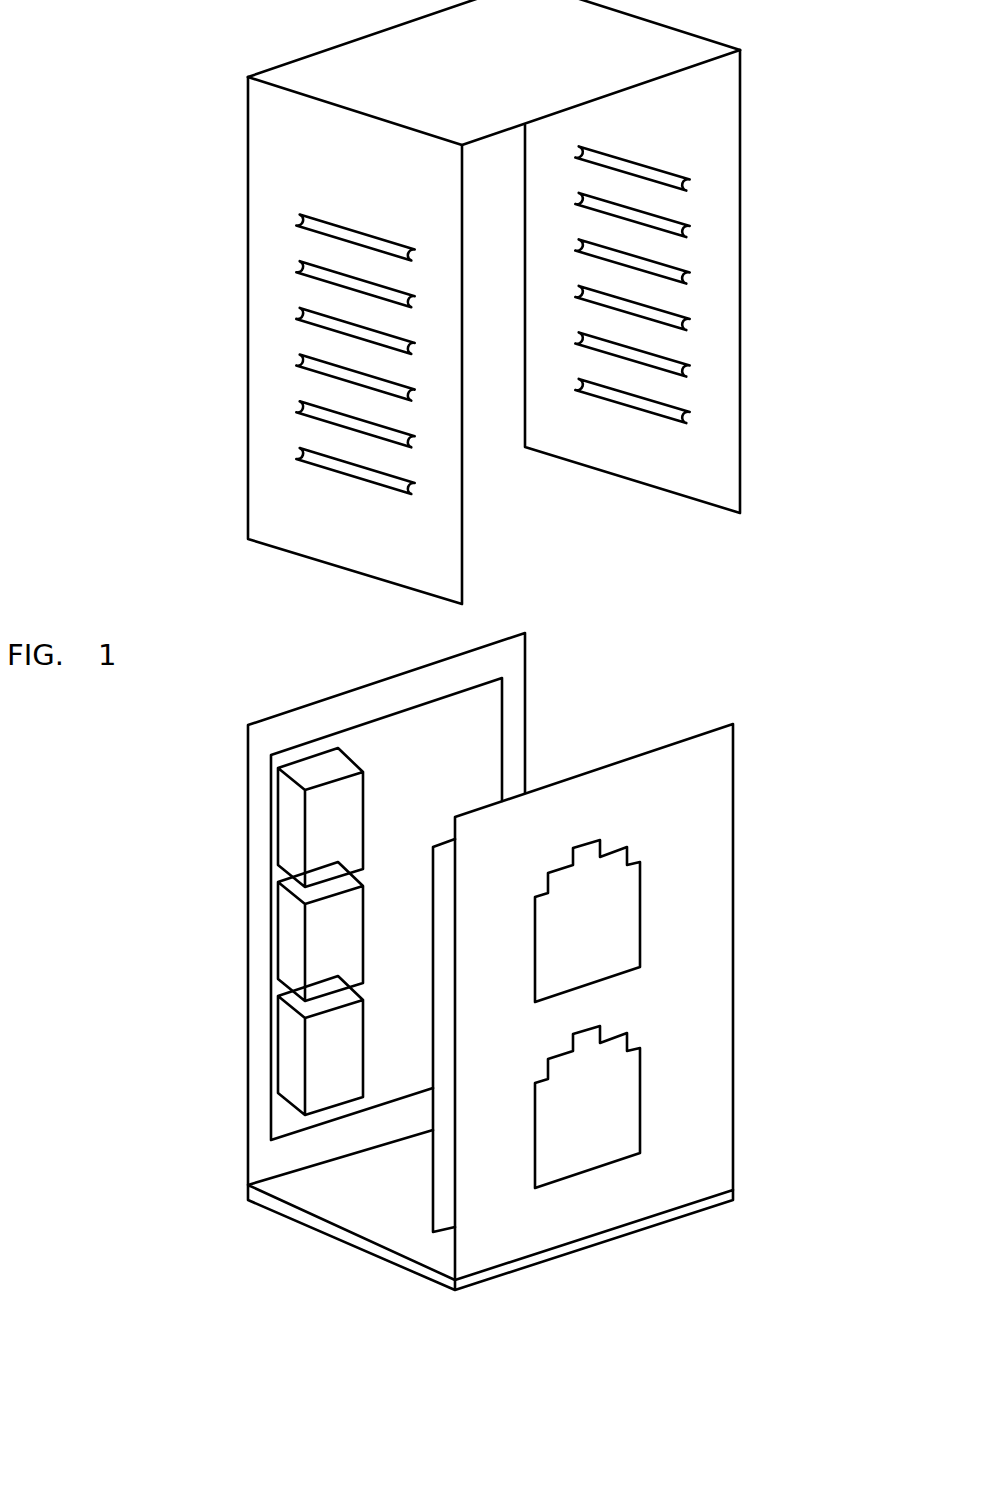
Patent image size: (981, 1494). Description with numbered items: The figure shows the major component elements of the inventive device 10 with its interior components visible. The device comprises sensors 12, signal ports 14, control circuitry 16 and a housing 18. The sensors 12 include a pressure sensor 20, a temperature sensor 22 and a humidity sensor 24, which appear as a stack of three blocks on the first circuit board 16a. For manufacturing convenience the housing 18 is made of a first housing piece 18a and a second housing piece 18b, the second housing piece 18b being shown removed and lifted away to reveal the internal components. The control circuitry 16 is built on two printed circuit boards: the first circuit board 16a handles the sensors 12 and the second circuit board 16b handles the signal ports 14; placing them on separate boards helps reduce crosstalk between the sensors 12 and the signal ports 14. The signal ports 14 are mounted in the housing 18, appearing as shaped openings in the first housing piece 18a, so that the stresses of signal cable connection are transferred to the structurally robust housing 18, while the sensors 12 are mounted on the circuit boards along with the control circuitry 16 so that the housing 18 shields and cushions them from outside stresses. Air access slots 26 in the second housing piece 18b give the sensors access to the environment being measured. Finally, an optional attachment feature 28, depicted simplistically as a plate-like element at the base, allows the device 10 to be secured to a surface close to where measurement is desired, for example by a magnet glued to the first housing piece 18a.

The inventive device 10 is at (674, 674).
The sensors 12 is at (295, 1072).
The signal ports 14 is at (607, 946).
The control circuitry 16 is at (469, 739).
The first circuit board 16a is at (479, 787).
The second circuit board 16b is at (443, 1208).
The housing 18 is at (512, 57).
The first housing piece 18a is at (708, 856).
The second housing piece 18b is at (524, 106).
The pressure sensor 20 is at (354, 854).
The temperature sensor 22 is at (354, 971).
The humidity sensor 24 is at (354, 1087).
The air access slots 26 is at (292, 453).
The attachment feature 28 is at (618, 1232).